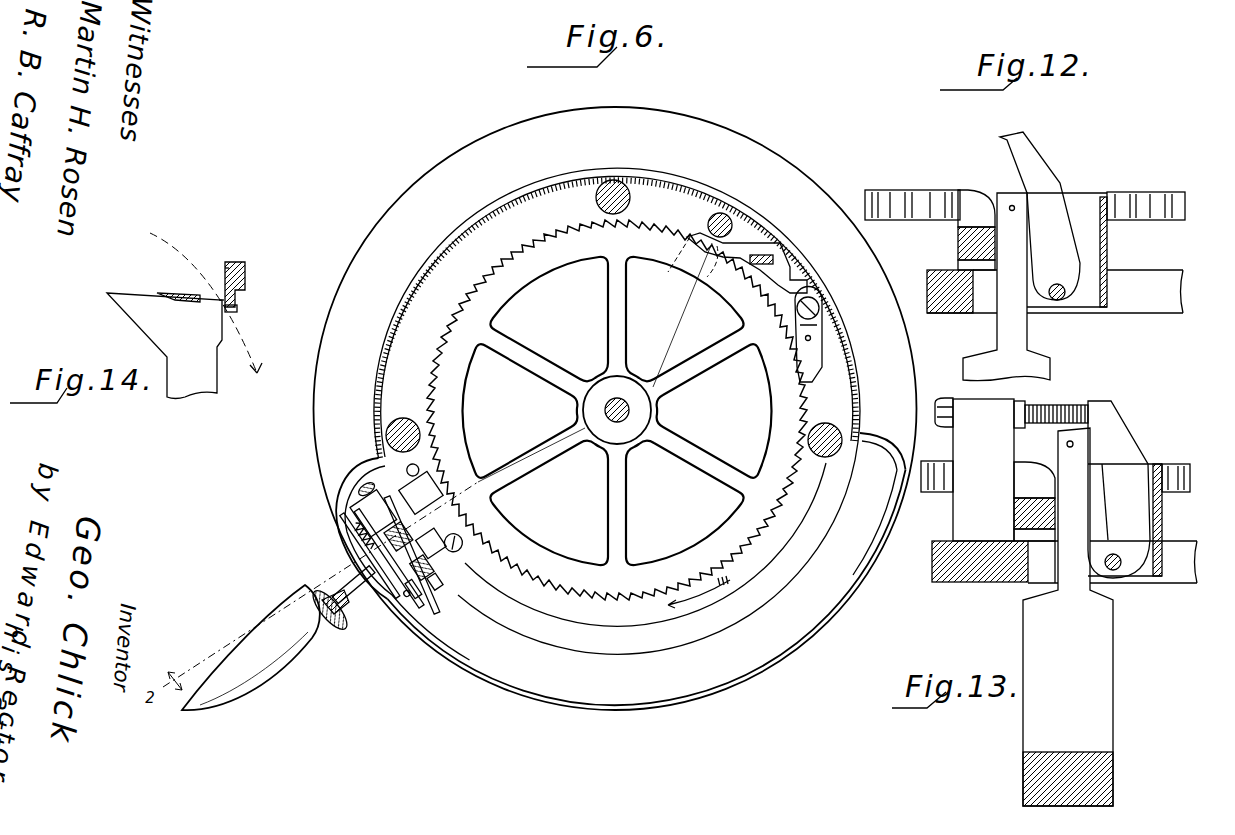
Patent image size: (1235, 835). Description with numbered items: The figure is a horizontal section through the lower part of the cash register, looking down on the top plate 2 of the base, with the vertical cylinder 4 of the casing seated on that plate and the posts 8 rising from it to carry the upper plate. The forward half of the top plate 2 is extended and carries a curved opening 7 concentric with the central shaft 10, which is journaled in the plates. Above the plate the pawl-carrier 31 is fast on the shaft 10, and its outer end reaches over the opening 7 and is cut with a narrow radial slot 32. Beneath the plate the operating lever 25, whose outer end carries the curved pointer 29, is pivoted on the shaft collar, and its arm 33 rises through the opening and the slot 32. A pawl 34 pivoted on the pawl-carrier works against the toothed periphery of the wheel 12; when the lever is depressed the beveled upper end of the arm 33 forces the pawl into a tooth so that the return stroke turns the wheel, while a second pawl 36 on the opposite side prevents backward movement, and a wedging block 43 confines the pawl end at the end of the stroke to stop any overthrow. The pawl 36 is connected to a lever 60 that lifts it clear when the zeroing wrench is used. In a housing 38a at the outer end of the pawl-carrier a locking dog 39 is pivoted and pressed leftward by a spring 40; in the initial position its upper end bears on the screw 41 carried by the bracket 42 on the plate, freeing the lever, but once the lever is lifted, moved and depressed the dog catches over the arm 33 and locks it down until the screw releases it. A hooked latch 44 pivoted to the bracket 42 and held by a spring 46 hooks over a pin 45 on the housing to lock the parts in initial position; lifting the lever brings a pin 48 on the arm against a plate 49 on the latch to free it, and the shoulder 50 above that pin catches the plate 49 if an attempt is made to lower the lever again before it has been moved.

In FIG. 6, the top plate 2 is at (615, 408).
In FIG. 12, the top plate 2 is at (1180, 288).
In FIG. 13, the top plate 2 is at (980, 584).
In FIG. 6, the vertical cylinder 4 is at (858, 366).
In FIG. 6, the curved opening 7 is at (813, 168).
In FIG. 6, the posts 8 is at (596, 197).
In FIG. 6, the central shaft 10 is at (630, 410).
In FIG. 6, the toothed wheel 12 is at (545, 298).
In FIG. 12, the toothed wheel 12 is at (917, 191).
In FIG. 13, the toothed wheel 12 is at (942, 486).
In FIG. 6, the operating lever 25 is at (251, 647).
In FIG. 13, the operating lever 25 is at (1113, 773).
In FIG. 6, the pointer 29 is at (350, 610).
In FIG. 6, the pawl-carrier 31 is at (553, 466).
In FIG. 12, the pawl-carrier 31 is at (958, 244).
In FIG. 13, the pawl-carrier 31 is at (1014, 513).
In FIG. 6, the slot 32 is at (347, 571).
In FIG. 6, the arm 33 is at (409, 544).
In FIG. 12, the arm 33 is at (1006, 287).
In FIG. 13, the arm 33 is at (1068, 617).
In FIG. 14, the arm 33 is at (164, 346).
In FIG. 6, the pawl 34 is at (438, 534).
In FIG. 6, the pawl 36 is at (812, 343).
In FIG. 6, the housing 38a is at (449, 574).
In FIG. 12, the housing 38a is at (1105, 241).
In FIG. 13, the housing 38a is at (1160, 508).
In FIG. 6, the locking dog 39 is at (447, 591).
In FIG. 12, the locking dog 39 is at (1053, 219).
In FIG. 13, the locking dog 39 is at (1125, 489).
In FIG. 12, the spring 40 is at (1066, 292).
In FIG. 13, the spring 40 is at (1150, 558).
In FIG. 6, the screw 41 is at (379, 482).
In FIG. 13, the screw 41 is at (1011, 406).
In FIG. 6, the bracket 42 is at (383, 506).
In FIG. 13, the bracket 42 is at (983, 470).
In FIG. 6, the wedging block 43 is at (416, 486).
In FIG. 6, the hooked latch 44 is at (402, 585).
In FIG. 14, the hooked latch 44 is at (247, 277).
In FIG. 6, the pin 45 is at (411, 555).
In FIG. 6, the spring 46 is at (343, 540).
In FIG. 14, the pin 48 is at (238, 309).
In FIG. 14, the plate 49 is at (226, 268).
In FIG. 14, the shoulder 50 is at (220, 304).
In FIG. 6, the lever 60 is at (805, 339).